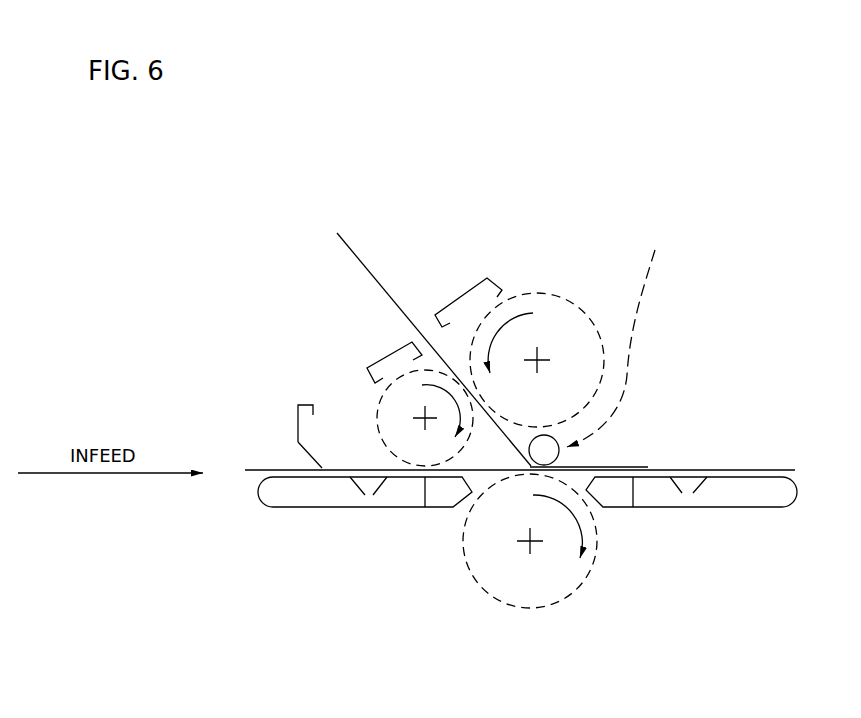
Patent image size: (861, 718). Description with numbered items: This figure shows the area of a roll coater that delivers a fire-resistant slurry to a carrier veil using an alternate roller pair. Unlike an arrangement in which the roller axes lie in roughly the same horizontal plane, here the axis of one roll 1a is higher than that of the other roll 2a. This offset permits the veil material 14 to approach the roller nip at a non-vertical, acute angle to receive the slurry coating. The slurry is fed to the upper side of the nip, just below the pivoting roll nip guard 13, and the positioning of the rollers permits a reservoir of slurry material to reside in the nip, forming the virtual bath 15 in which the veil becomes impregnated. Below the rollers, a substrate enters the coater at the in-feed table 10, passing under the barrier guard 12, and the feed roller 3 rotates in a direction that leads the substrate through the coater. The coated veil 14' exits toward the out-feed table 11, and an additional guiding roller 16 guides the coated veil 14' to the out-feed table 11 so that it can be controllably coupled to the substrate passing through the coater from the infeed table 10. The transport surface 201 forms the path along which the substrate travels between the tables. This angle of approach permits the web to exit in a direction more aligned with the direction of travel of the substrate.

The in-feed table 10 is at (283, 473).
The out-feed table 11 is at (660, 472).
The barrier guard 12 is at (297, 397).
The pivoting roll nip guard 13 is at (462, 293).
The veil material 14 is at (434, 330).
The coated veil 14' is at (624, 353).
The virtual bath 15 is at (460, 347).
The guiding roller 16 is at (618, 339).
The roll 1a is at (559, 294).
The roll 2a is at (377, 418).
The transport surface 201 is at (745, 468).
The feed roller 3 is at (573, 597).